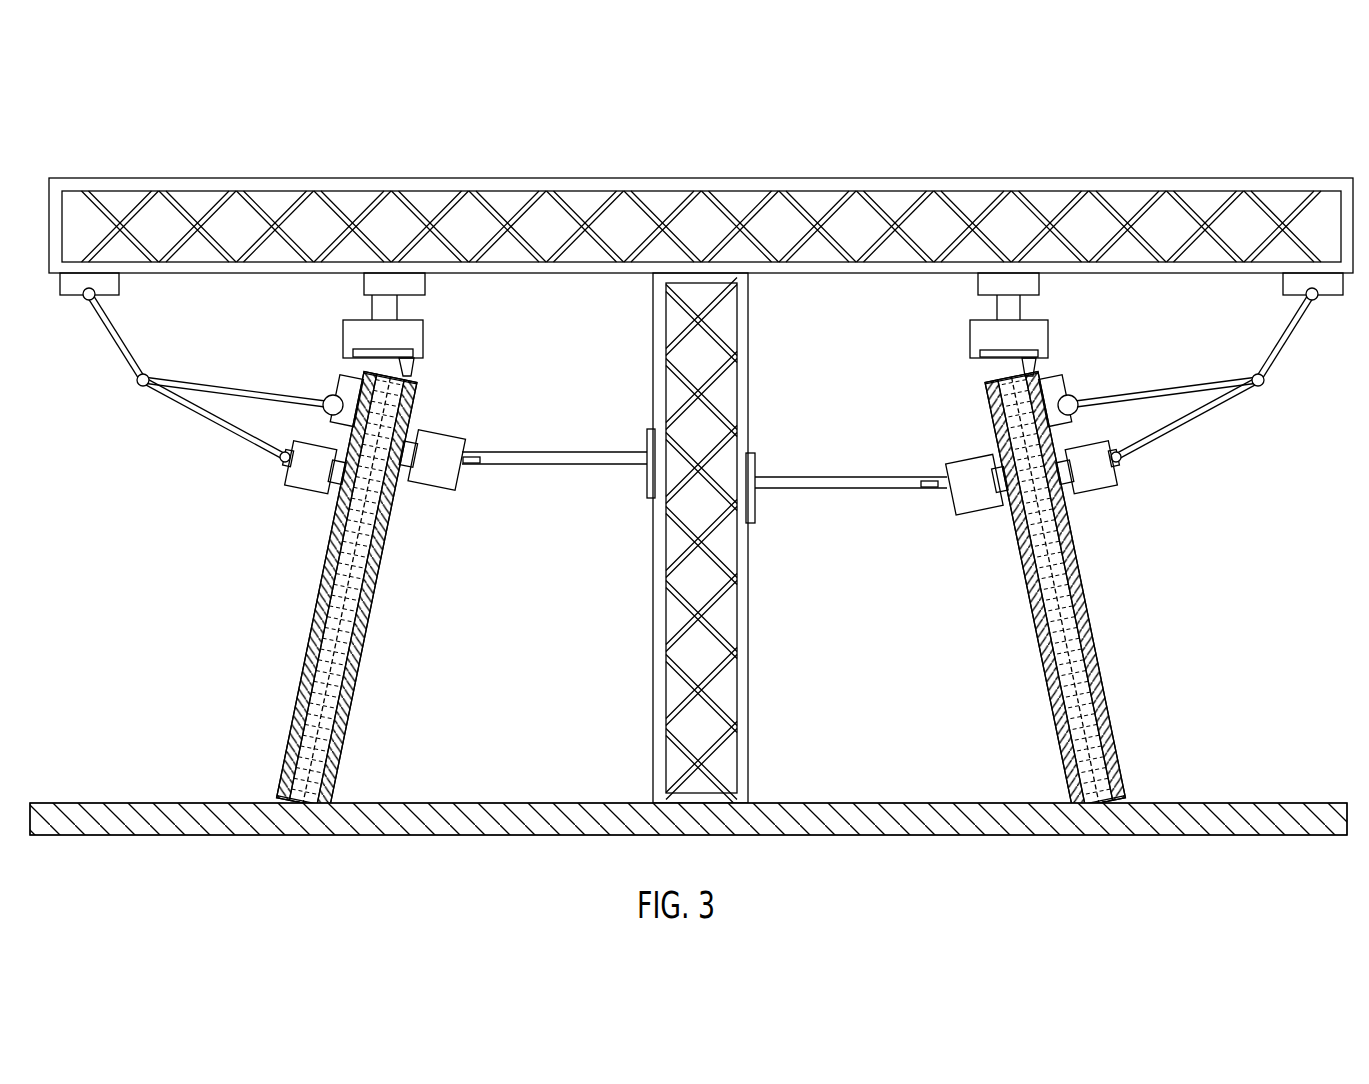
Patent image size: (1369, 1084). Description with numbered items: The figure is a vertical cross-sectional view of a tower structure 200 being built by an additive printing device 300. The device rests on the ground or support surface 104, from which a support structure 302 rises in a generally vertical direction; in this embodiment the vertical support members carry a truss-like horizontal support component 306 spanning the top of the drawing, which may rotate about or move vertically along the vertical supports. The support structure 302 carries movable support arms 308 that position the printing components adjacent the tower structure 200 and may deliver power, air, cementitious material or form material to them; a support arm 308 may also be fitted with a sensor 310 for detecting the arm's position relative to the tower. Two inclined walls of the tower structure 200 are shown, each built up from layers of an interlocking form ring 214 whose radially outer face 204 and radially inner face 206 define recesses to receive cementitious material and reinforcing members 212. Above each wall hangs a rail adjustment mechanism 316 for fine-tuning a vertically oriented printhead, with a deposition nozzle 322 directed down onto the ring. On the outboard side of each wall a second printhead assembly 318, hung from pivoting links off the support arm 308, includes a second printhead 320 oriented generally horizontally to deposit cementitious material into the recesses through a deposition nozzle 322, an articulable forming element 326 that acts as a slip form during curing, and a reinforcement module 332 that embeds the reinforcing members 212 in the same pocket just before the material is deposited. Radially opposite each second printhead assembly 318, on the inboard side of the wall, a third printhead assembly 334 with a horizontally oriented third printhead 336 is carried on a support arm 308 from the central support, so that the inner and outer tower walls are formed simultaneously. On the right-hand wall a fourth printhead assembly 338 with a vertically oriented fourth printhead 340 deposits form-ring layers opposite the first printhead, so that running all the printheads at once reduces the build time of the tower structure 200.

The support surface 104 is at (1243, 802).
The tower structure 200 is at (737, 585).
The radially outer face 204 is at (292, 706).
The radially inner face 206 is at (355, 735).
The reinforcing member 212 is at (323, 400).
The interlocking form ring 214 is at (292, 796).
The additive printing device 300 is at (691, 456).
The support structure 302 is at (701, 465).
The horizontal support component 306 is at (1145, 180).
The support arm 308 is at (701, 398).
The sensor 310 is at (470, 466).
The rail adjustment mechanism 316 is at (758, 318).
The second printhead assembly 318 is at (263, 386).
The second printhead 320 is at (282, 500).
The deposition nozzle 322 is at (413, 372).
The articulable forming element 326 is at (335, 497).
The reinforcement module 332 is at (343, 385).
The third printhead assembly 334 is at (705, 490).
The third printhead 336 is at (447, 431).
The fourth printhead assembly 338 is at (942, 311).
The fourth printhead 340 is at (1067, 330).